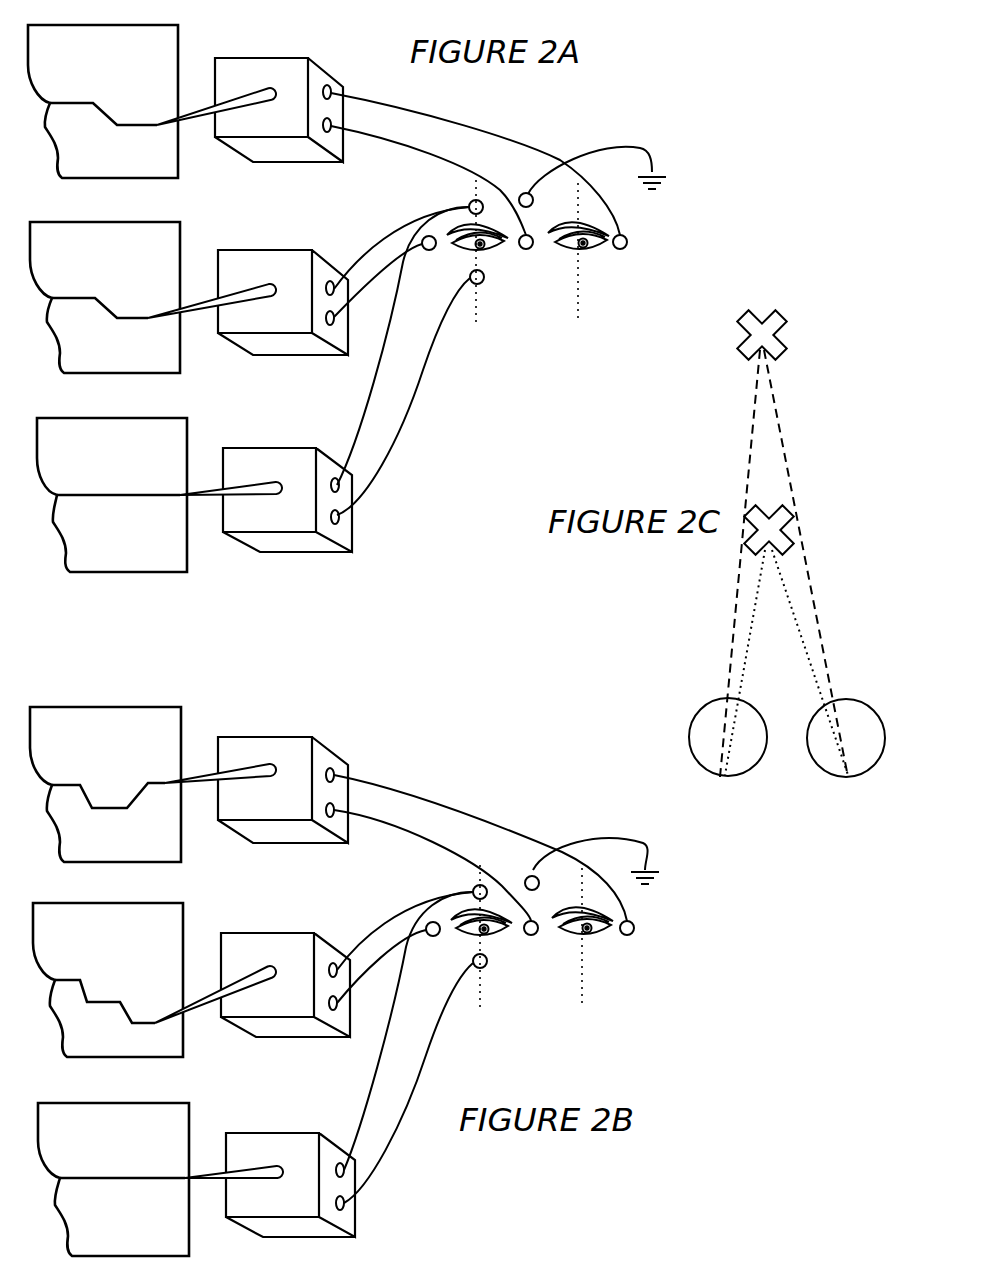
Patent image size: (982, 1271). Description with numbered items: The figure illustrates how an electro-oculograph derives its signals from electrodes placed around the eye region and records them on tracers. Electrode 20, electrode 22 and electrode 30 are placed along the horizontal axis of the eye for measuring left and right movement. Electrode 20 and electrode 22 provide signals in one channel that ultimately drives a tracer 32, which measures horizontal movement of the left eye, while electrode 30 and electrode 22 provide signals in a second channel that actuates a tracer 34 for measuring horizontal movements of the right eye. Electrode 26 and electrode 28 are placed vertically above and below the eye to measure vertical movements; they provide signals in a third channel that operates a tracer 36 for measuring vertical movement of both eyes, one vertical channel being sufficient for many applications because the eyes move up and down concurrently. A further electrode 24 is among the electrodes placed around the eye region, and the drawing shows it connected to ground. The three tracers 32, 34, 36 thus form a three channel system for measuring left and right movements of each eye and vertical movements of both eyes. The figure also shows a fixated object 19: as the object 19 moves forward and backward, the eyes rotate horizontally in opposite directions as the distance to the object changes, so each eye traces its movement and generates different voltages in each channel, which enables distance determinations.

In FIG. 2C, the fixated object 19 is at (740, 350).
In FIG. 2A, the electrode 20 is at (618, 249).
In FIG. 2B, the electrode 20 is at (625, 935).
In FIG. 2A, the electrode 22 is at (528, 249).
In FIG. 2B, the electrode 22 is at (533, 935).
In FIG. 2A, the electrode 24 is at (530, 194).
In FIG. 2B, the electrode 24 is at (530, 876).
In FIG. 2A, the electrode 26 is at (469, 204).
In FIG. 2B, the electrode 26 is at (473, 888).
In FIG. 2A, the electrode 28 is at (485, 286).
In FIG. 2B, the electrode 28 is at (488, 970).
In FIG. 2A, the electrode 30 is at (429, 250).
In FIG. 2B, the electrode 30 is at (433, 936).
In FIG. 2A, the tracer 32 is at (325, 60).
In FIG. 2B, the tracer 32 is at (325, 740).
In FIG. 2A, the tracer 34 is at (316, 250).
In FIG. 2B, the tracer 34 is at (316, 933).
In FIG. 2A, the tracer 36 is at (314, 448).
In FIG. 2B, the tracer 36 is at (316, 1133).